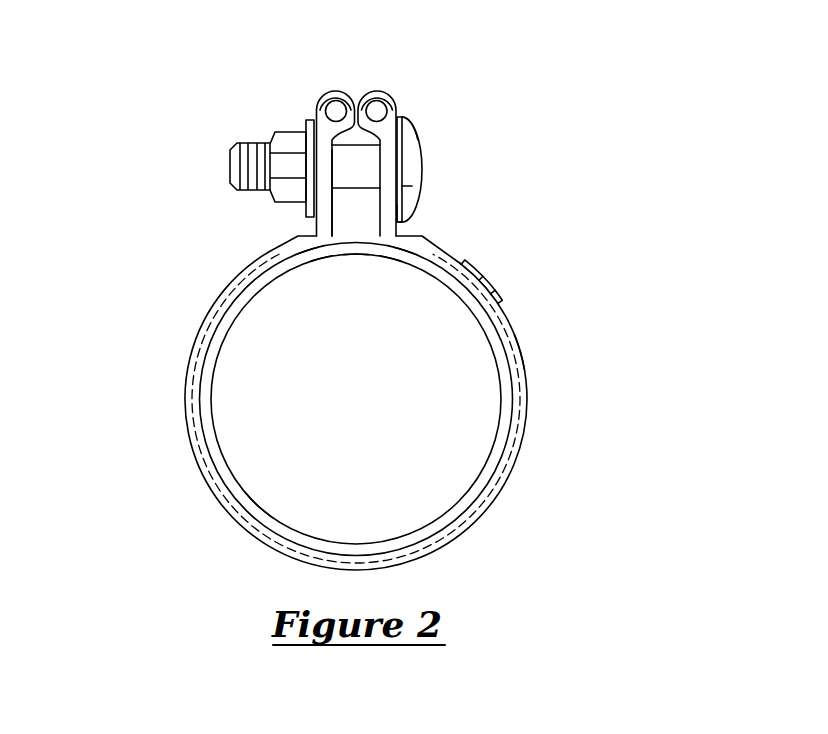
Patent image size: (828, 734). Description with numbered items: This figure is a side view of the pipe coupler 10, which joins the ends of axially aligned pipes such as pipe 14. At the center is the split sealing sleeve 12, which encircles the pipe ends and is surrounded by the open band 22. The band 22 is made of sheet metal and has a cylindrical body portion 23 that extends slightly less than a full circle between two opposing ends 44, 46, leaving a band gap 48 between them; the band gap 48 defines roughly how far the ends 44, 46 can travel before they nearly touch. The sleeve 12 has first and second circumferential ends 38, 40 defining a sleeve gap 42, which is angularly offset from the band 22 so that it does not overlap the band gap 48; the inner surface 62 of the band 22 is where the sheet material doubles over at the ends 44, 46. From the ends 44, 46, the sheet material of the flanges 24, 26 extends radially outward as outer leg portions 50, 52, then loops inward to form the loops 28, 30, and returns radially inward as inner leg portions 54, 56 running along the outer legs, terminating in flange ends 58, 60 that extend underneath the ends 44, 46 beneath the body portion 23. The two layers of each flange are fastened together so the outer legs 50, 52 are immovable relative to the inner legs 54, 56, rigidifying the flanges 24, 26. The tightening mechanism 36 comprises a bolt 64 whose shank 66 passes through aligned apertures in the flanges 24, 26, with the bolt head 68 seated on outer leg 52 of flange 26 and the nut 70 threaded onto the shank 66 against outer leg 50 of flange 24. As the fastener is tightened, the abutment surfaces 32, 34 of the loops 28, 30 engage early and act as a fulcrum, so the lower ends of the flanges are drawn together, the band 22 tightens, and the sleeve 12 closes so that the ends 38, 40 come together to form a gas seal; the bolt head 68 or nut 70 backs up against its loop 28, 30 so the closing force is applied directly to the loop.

The coupler 10 is at (500, 196).
The split sealing sleeve 12 is at (528, 387).
The pipe 14 is at (508, 423).
The open band 22 is at (525, 350).
The cylindrical body portion 23 is at (223, 510).
The flange 24 is at (314, 108).
The flange 26 is at (401, 99).
The loop 28 is at (325, 94).
The loop 30 is at (388, 93).
The abutment surface 32 is at (355, 97).
The abutment surface 34 is at (358, 97).
The tightening mechanism 36 is at (416, 121).
The first circumferential end 38 is at (473, 277).
The second circumferential end 40 is at (488, 293).
The sleeve gap 42 is at (493, 278).
The band end 44 is at (298, 240).
The band end 46 is at (424, 245).
The band gap 48 is at (357, 218).
The outer leg portion 50 is at (306, 187).
The outer leg portion 52 is at (400, 214).
The inner leg portion 54 is at (332, 200).
The inner leg portion 56 is at (405, 186).
The flange end 58 is at (321, 240).
The flange end 60 is at (396, 242).
The inner surface 62 is at (198, 343).
The bolt 64 is at (422, 170).
The shank 66 is at (230, 167).
The bolt head 68 is at (402, 128).
The nut 70 is at (275, 131).